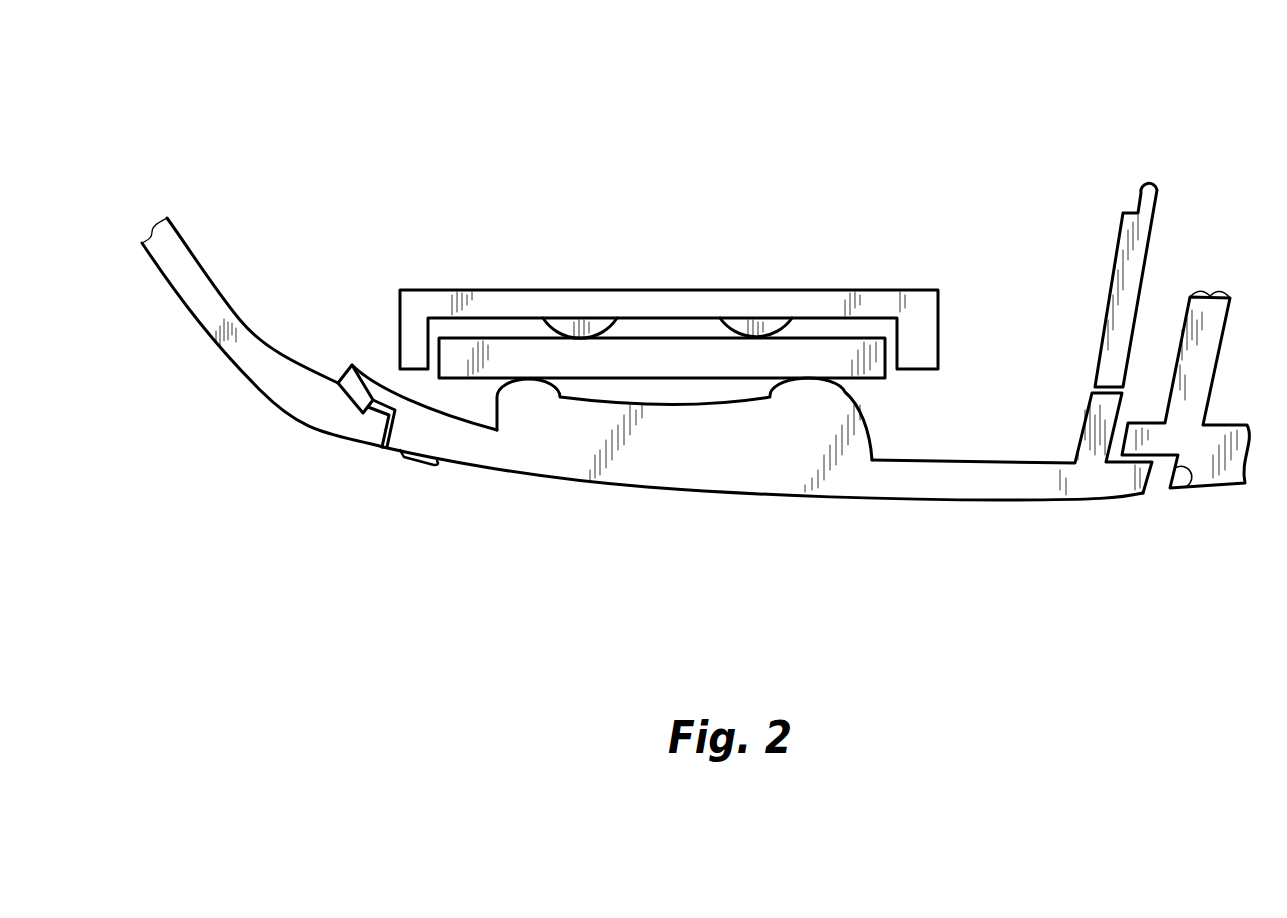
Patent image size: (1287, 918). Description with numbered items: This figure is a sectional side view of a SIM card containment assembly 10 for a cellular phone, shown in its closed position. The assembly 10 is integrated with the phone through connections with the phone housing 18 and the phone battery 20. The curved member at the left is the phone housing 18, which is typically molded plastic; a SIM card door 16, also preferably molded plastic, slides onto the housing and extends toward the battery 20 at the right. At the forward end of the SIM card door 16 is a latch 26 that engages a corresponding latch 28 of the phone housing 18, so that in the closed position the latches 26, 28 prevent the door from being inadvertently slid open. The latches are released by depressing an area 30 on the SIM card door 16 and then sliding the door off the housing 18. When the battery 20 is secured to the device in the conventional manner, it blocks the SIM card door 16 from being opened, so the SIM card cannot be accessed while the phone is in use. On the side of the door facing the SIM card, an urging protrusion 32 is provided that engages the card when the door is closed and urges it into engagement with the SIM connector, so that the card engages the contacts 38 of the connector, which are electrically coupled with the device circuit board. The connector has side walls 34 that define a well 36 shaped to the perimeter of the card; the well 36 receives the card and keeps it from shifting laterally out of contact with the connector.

The SIM card containment assembly 10 is at (442, 190).
The SIM card door 16 is at (781, 477).
The phone housing 18 is at (345, 420).
The phone battery 20 is at (1190, 486).
The latch 26 is at (347, 373).
The latch 28 is at (378, 442).
The area 30 is at (420, 456).
The urging protrusion 32 is at (852, 421).
The side wall 34 is at (410, 310).
The well 36 is at (832, 327).
The contact 38 is at (747, 316).